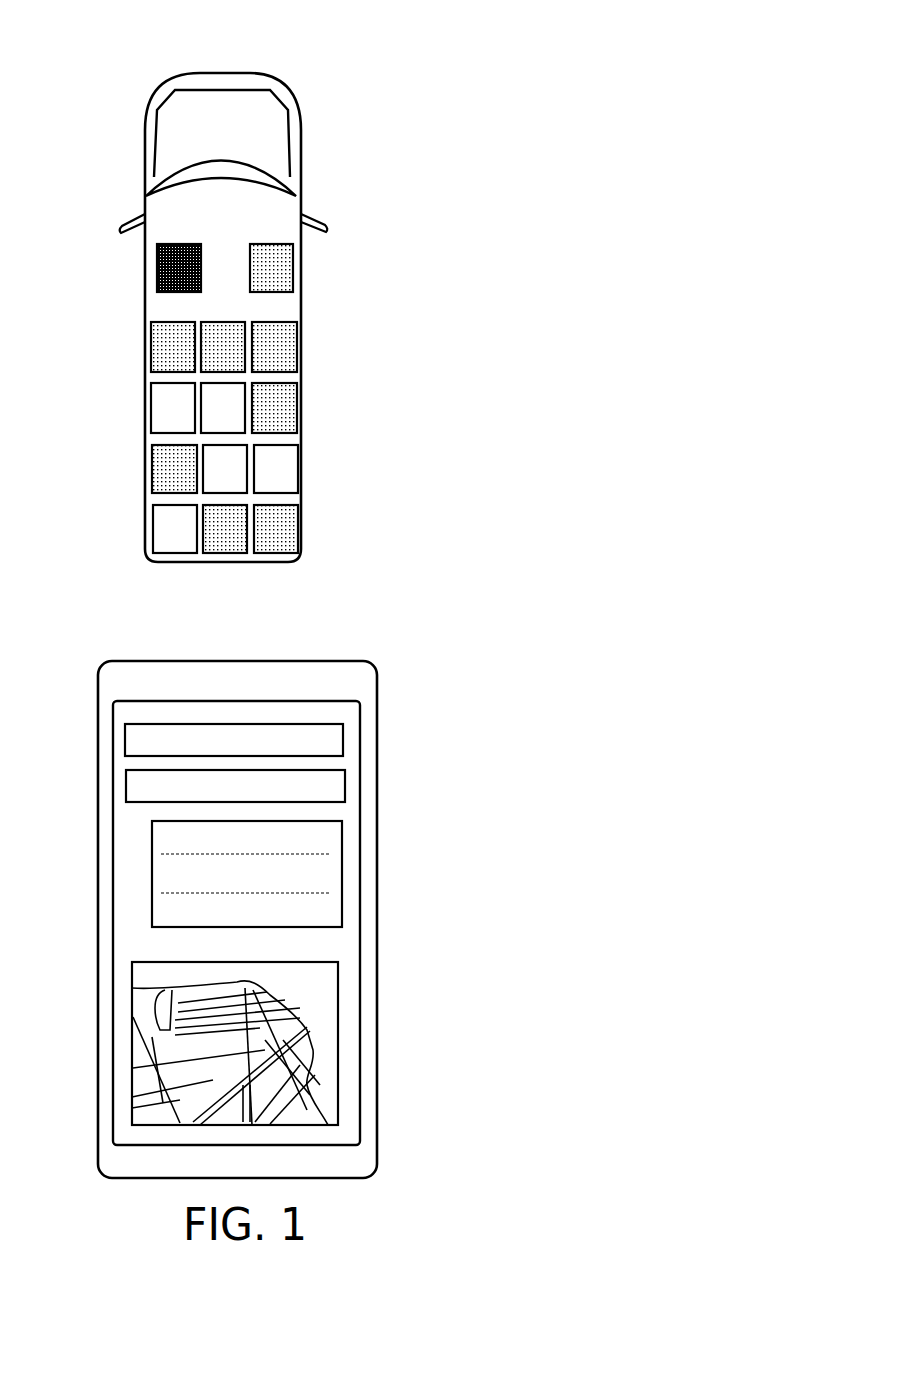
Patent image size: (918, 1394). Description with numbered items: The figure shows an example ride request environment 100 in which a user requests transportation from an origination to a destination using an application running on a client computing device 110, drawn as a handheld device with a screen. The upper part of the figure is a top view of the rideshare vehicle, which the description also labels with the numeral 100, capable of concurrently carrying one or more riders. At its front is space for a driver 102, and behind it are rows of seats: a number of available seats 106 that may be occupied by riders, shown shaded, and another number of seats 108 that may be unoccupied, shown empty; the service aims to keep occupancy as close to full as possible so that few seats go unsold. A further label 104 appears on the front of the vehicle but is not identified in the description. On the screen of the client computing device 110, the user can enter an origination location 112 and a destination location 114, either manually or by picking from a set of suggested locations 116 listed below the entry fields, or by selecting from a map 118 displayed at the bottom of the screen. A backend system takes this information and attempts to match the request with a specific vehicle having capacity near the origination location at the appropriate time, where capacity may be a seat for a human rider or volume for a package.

The environment 100 is at (476, 106).
The driver 102 is at (302, 157).
The driver seat 104 is at (157, 281).
The available seats 106 is at (292, 277).
The seats 108 is at (148, 437).
The client computing device 110 is at (378, 922).
The origination location 112 is at (125, 740).
The destination location 114 is at (128, 797).
The suggested locations 116 is at (153, 867).
The map 118 is at (132, 1048).